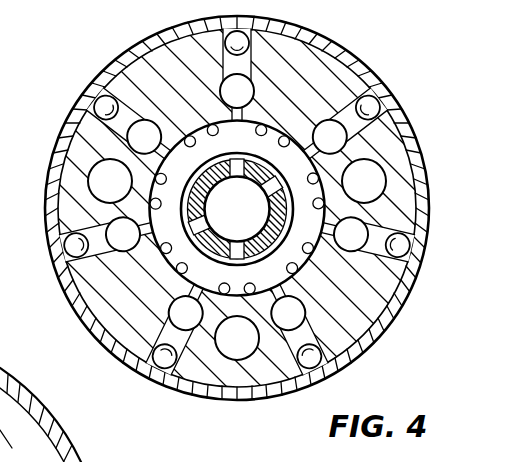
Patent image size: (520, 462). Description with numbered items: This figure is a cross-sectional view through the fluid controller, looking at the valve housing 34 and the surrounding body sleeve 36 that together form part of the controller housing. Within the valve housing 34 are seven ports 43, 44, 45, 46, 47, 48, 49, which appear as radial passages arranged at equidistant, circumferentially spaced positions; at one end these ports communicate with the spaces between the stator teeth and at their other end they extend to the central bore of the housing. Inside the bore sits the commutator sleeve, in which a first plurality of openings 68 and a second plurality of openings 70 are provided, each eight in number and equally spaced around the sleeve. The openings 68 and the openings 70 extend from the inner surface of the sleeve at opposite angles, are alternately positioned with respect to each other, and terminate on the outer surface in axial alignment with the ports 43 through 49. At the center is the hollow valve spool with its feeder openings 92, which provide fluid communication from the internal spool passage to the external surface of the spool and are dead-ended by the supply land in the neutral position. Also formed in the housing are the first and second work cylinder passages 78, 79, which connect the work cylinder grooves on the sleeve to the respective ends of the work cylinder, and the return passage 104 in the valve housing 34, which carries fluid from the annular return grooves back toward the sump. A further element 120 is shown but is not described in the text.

The valve housing 34 is at (306, 63).
The body sleeve 36 is at (162, 36).
The port 43 is at (137, 139).
The port 44 is at (226, 80).
The port 45 is at (333, 118).
The port 46 is at (349, 240).
The port 47 is at (302, 311).
The port 48 is at (172, 310).
The port 49 is at (123, 254).
The first plurality of openings 68 is at (212, 133).
The second plurality of openings 70 is at (198, 124).
The first work cylinder passage 78 is at (373, 176).
The second work cylinder passage 79 is at (97, 180).
The feeder openings 92 is at (237, 180).
The return passage 104 is at (230, 367).
The ring 120 is at (2, 455).